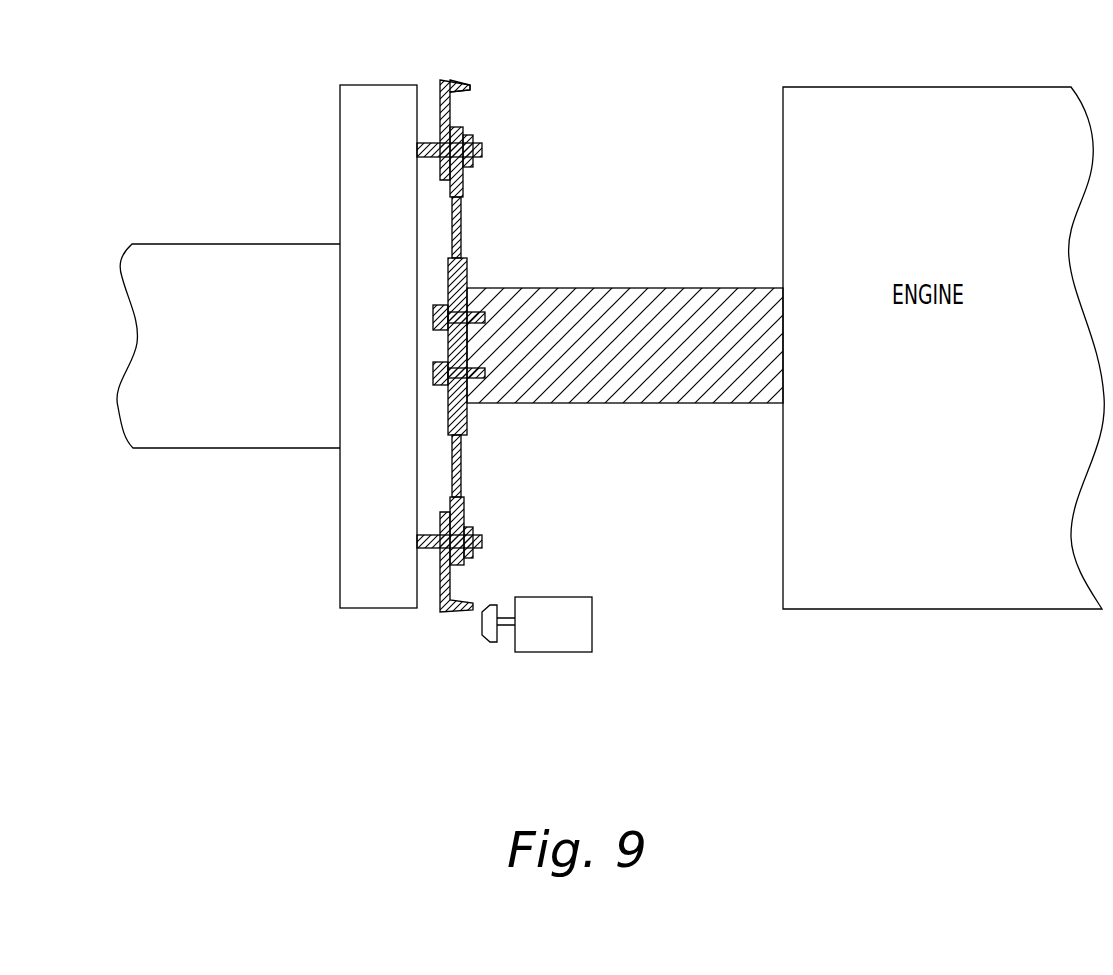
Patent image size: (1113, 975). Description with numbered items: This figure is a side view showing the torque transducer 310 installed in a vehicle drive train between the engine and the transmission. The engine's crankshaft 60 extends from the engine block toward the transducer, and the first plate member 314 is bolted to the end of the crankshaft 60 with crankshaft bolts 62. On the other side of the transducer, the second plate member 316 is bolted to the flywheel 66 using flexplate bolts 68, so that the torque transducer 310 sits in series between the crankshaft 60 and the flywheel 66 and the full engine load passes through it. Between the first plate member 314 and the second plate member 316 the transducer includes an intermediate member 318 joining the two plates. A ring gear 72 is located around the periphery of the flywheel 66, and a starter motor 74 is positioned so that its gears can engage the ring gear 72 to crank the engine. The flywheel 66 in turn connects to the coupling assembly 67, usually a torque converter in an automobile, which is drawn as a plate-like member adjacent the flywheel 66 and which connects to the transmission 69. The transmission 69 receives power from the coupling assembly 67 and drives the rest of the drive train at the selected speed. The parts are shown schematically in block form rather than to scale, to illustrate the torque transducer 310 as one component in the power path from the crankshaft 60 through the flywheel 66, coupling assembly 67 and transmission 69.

The crankshaft 60 is at (720, 310).
The crankshaft bolts 62 is at (485, 317).
The flywheel 66 is at (450, 110).
The coupling assembly 67 is at (390, 95).
The flexplate bolts 68 is at (483, 150).
The transmission 69 is at (172, 258).
The ring gear 72 is at (462, 85).
The starter motor 74 is at (565, 654).
The torque transducer 310 is at (612, 152).
The first plate member 314 is at (470, 272).
The second plate member 316 is at (465, 185).
The rod 318 is at (463, 232).